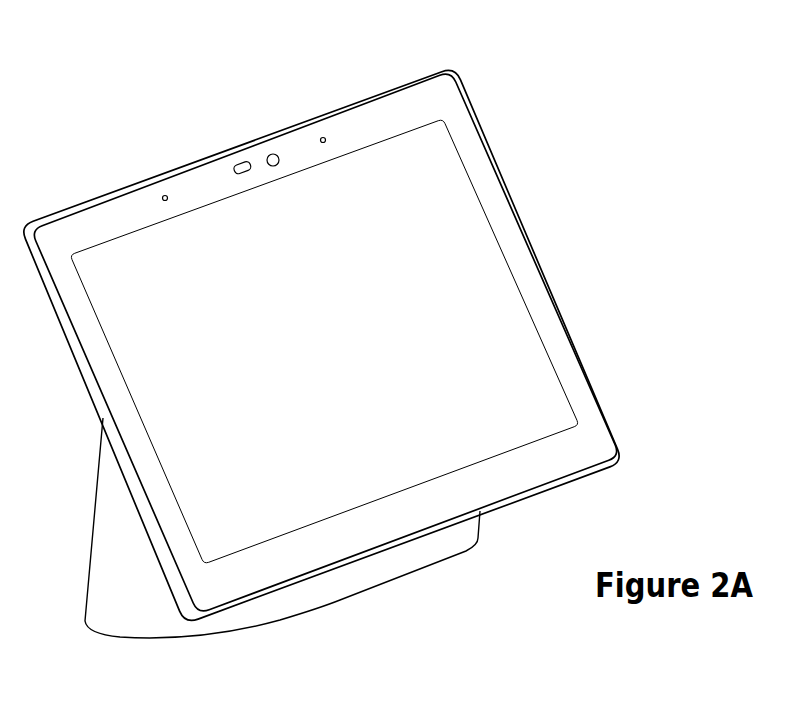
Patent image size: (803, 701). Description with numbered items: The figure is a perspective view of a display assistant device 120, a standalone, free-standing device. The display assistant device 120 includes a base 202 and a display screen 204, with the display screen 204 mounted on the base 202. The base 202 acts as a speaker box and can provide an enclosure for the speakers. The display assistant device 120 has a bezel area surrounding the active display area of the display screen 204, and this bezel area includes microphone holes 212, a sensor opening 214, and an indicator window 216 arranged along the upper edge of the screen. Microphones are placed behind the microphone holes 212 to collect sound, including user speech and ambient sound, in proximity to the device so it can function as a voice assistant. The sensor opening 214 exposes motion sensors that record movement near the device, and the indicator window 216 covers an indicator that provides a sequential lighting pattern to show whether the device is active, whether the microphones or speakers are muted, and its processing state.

The display assistant device 120 is at (181, 54).
The base 202 is at (158, 608).
The display screen 204 is at (347, 355).
The microphone holes 212 is at (165, 195).
The sensor opening 214 is at (234, 161).
The indicator window 216 is at (268, 153).